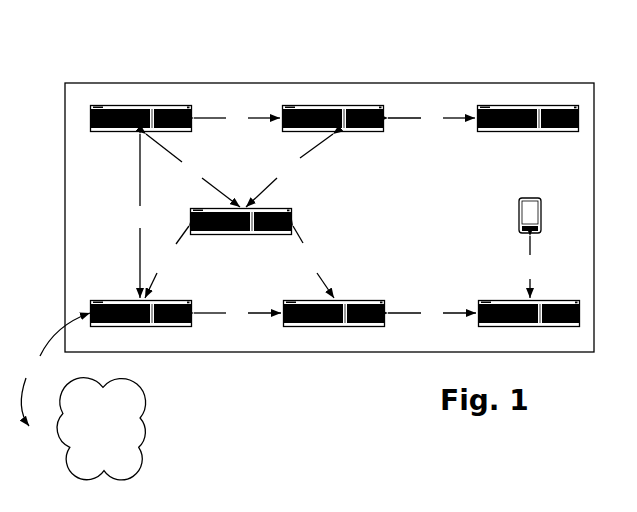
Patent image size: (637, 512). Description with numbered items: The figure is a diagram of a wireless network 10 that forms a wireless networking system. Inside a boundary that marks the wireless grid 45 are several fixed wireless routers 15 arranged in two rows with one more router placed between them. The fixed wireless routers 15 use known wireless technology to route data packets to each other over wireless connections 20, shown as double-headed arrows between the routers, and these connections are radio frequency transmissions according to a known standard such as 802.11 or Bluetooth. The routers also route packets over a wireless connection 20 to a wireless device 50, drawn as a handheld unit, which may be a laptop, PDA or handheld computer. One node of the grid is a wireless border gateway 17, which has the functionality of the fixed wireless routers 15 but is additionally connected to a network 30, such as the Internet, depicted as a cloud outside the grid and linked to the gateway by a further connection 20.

The wireless network 10 is at (110, 220).
The fixed wireless router 15 is at (335, 219).
The wireless border gateway 17 is at (141, 326).
The wireless connection 20 is at (279, 267).
The network 30 is at (101, 429).
The wireless grid 45 is at (329, 217).
The wireless device 50 is at (543, 215).